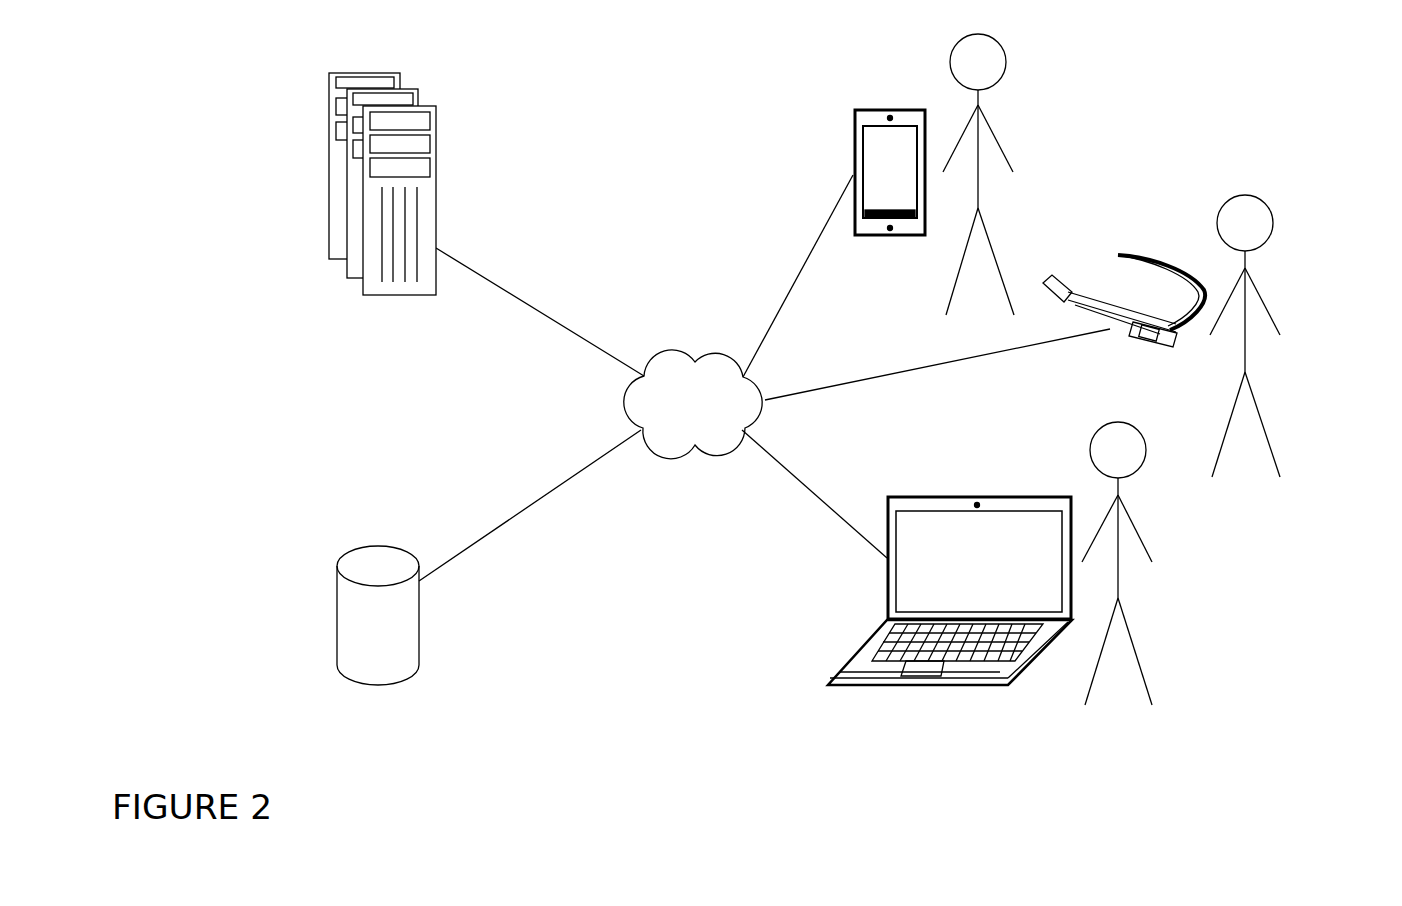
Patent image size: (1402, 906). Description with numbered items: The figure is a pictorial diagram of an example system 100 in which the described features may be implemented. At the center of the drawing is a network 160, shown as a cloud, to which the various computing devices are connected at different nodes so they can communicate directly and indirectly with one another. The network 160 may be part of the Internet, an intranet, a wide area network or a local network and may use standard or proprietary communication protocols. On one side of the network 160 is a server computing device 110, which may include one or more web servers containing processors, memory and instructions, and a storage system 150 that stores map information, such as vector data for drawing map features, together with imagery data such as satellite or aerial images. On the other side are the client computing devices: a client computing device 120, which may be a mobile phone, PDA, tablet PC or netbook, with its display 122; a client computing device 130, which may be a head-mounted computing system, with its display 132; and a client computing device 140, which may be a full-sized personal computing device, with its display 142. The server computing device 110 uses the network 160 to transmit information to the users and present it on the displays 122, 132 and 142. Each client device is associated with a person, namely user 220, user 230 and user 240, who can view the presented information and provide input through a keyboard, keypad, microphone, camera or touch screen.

The system 100 is at (210, 764).
The server computing device 110 is at (436, 147).
The client computing device 120 is at (835, 172).
The display 122 is at (853, 168).
The client computing device 130 is at (1124, 296).
The display 132 is at (1170, 340).
The client computing device 140 is at (925, 591).
The display 142 is at (887, 604).
The storage system 150 is at (419, 634).
The network 160 is at (693, 404).
The user 220 is at (1008, 160).
The user 230 is at (1276, 326).
The user 240 is at (1148, 553).